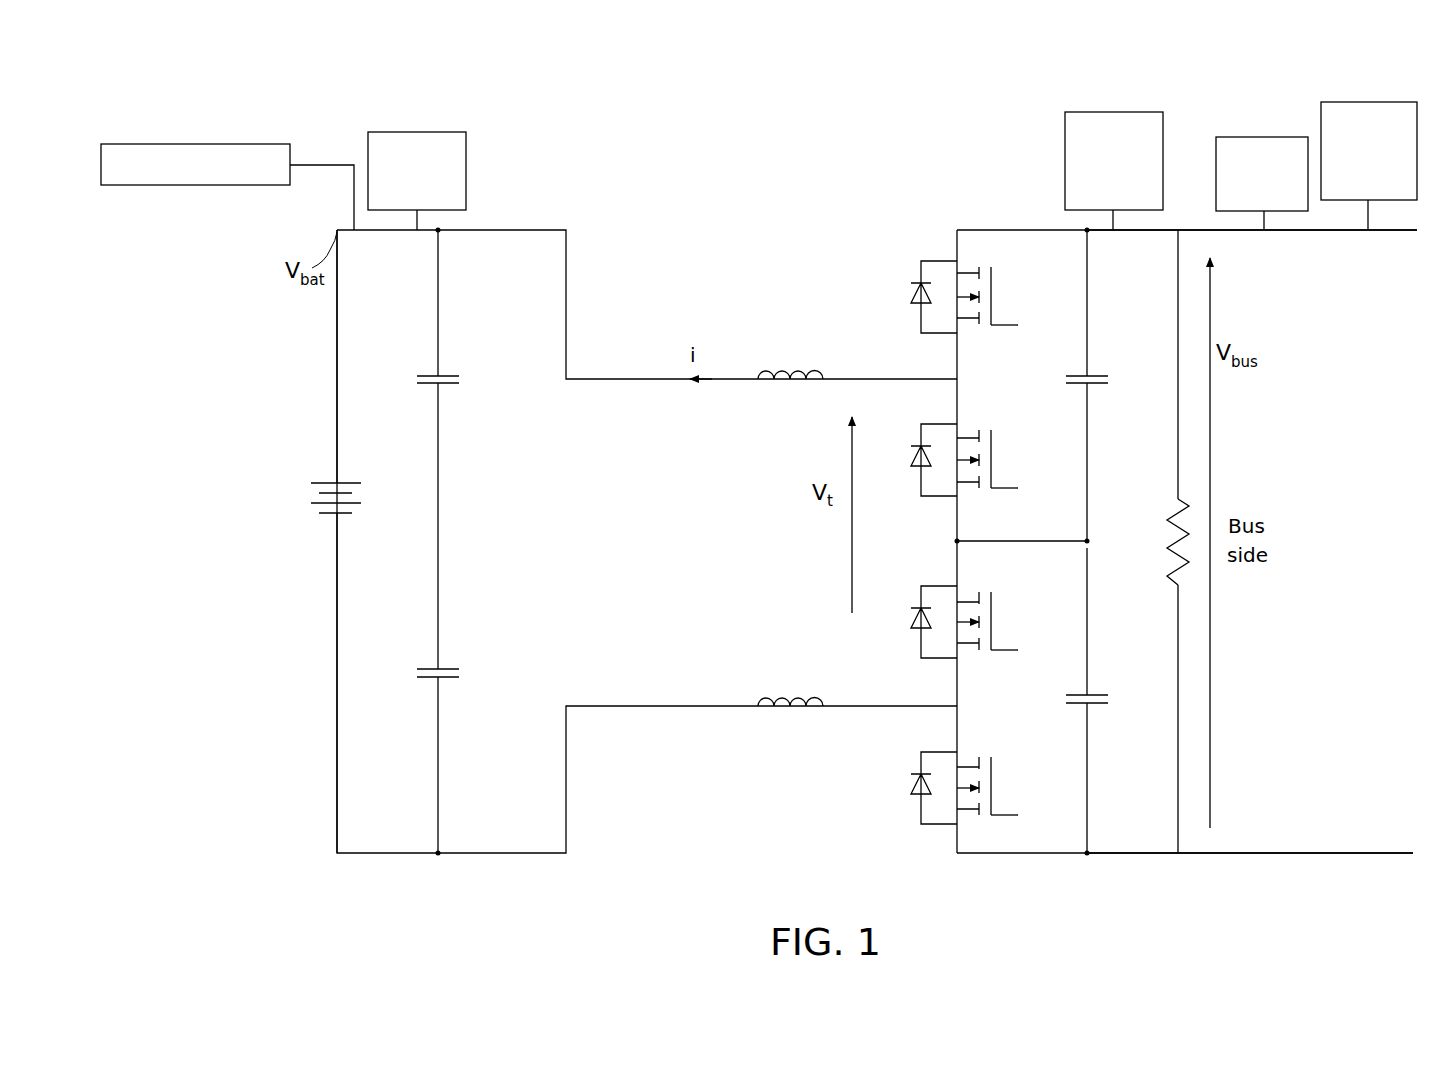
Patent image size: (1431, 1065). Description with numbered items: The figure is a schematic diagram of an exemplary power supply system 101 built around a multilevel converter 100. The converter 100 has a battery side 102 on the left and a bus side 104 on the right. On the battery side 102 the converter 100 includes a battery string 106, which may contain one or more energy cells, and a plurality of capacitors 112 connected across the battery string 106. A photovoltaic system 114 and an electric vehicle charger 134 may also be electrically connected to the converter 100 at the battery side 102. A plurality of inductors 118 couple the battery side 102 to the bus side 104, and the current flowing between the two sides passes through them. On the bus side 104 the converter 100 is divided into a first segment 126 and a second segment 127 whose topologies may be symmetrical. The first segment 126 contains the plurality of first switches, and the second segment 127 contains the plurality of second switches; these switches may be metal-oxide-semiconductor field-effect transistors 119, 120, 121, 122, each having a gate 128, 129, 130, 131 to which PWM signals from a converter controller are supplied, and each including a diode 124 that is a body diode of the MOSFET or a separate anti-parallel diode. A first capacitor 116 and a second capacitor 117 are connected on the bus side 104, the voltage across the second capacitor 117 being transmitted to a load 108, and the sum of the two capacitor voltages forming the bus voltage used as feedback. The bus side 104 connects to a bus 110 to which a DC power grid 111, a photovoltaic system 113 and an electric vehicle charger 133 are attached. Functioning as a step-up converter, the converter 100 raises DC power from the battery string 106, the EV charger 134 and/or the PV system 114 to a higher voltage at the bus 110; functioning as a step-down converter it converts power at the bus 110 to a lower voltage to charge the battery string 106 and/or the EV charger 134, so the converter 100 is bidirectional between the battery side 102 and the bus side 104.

The multilevel converter 100 is at (272, 228).
The power supply system 101 is at (212, 90).
The battery side 102 is at (325, 857).
The bus side 104 is at (1188, 854).
The battery string 106 is at (330, 517).
The load 108 is at (1172, 522).
The bus 110 is at (1158, 227).
The DC power grid 111 is at (1063, 150).
The capacitors 112 is at (447, 370).
The photovoltaic system 113 is at (1250, 134).
The photovoltaic system 114 is at (466, 170).
The first capacitor 116 is at (1093, 372).
The second capacitor 117 is at (1093, 690).
The inductors 118 is at (812, 370).
The MOSFET 119 is at (998, 276).
The MOSFET 120 is at (998, 439).
The MOSFET 121 is at (998, 601).
The MOSFET 122 is at (998, 766).
The diode 124 is at (915, 290).
The first segment 126 is at (1102, 285).
The second segment 127 is at (1096, 821).
The gate 128 is at (1006, 327).
The gate 129 is at (1006, 490).
The gate 130 is at (1006, 652).
The gate 131 is at (1006, 817).
The electric vehicle charger 133 is at (1362, 98).
The electric vehicle charger 134 is at (120, 188).